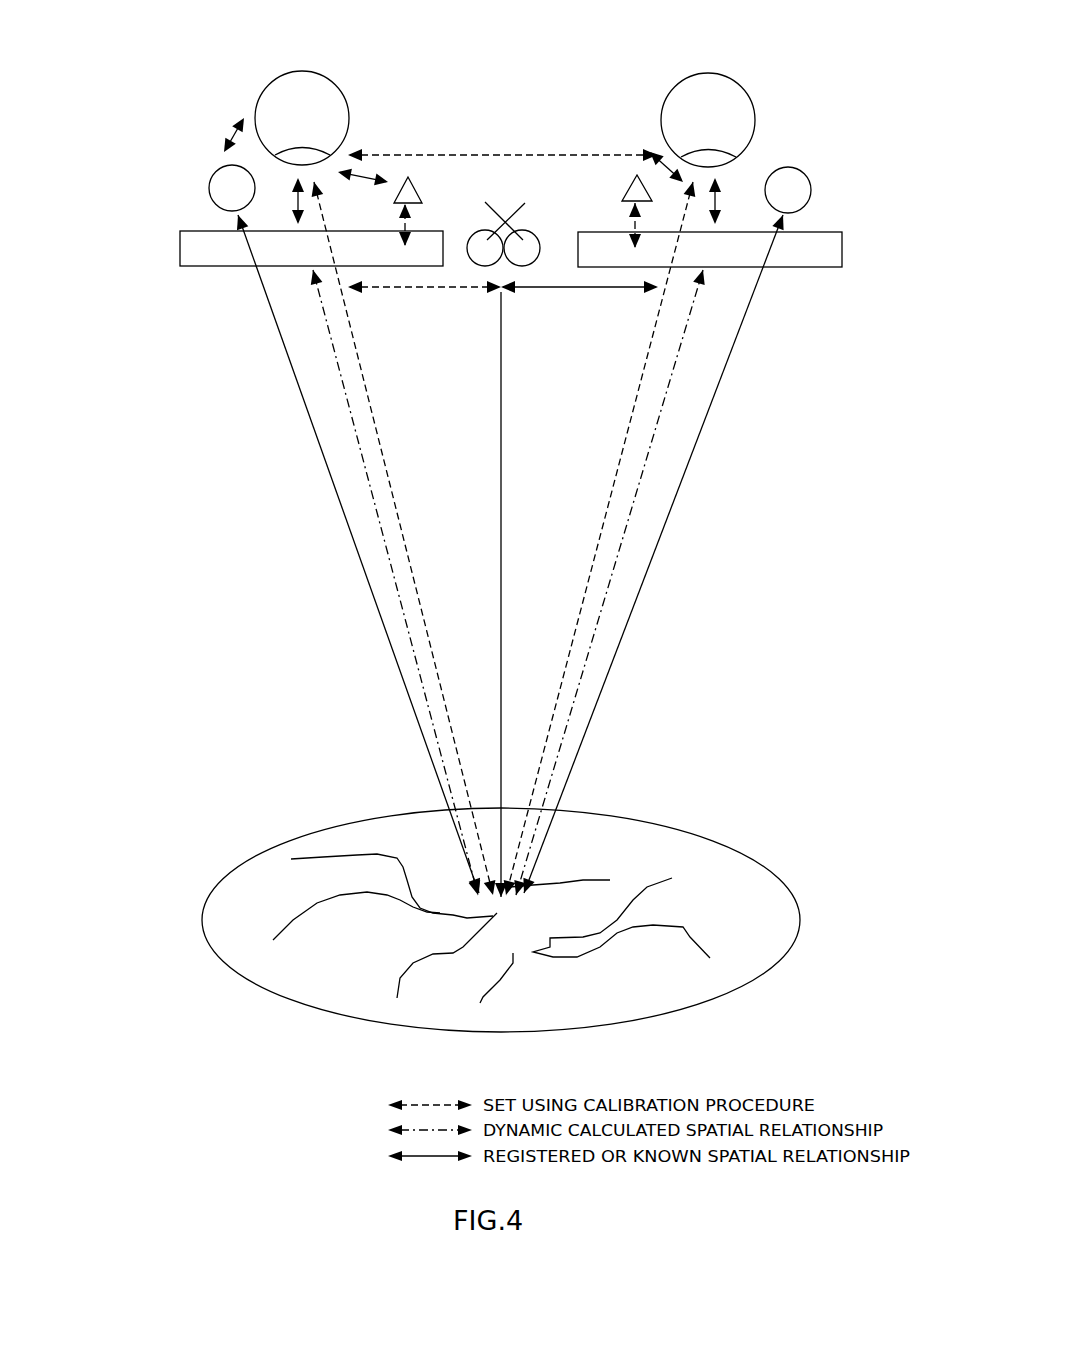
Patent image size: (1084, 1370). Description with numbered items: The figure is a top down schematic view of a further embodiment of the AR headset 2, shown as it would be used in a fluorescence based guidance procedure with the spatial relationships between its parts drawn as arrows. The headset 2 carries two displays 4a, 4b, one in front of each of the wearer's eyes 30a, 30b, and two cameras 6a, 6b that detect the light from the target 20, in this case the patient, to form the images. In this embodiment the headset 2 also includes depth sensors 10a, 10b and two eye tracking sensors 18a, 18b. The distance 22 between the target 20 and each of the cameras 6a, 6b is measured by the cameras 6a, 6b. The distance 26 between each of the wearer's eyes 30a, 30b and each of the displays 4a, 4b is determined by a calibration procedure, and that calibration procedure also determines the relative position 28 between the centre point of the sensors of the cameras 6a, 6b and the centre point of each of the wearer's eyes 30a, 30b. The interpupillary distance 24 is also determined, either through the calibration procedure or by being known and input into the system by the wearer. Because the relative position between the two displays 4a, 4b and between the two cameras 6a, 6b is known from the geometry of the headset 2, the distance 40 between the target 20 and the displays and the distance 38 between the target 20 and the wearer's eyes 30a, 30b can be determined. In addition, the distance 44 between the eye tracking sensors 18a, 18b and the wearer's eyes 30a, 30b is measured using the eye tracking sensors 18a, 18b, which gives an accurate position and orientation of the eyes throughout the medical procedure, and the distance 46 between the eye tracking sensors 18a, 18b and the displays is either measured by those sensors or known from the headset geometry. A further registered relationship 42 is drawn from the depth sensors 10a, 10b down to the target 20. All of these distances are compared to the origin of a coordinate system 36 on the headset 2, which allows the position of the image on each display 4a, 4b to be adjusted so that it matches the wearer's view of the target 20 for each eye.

The AR headset 2 is at (142, 162).
The display 4a is at (200, 268).
The display 4b is at (826, 268).
The camera 6a is at (210, 195).
The camera 6b is at (810, 183).
The depth sensor 10a is at (483, 266).
The depth sensor 10b is at (521, 268).
The eye tracking sensor 18a is at (417, 170).
The eye tracking sensor 18b is at (628, 172).
The target 20 is at (297, 835).
The distance between the target and each camera 22 is at (341, 503).
The interpupillary distance 24 is at (515, 155).
The distance between the wearer's eyes and the displays 26 is at (298, 218).
The relative position between camera sensor centre point and eye centre point 28 is at (238, 128).
The wearer's eye 30a is at (282, 76).
The wearer's eye 30b is at (742, 85).
The origin of a coordinate system 36 is at (504, 218).
The distance between the target and the wearer's eyes 38 is at (391, 495).
The distance between the target and the display 40 is at (350, 410).
The registered relationship between projector and anatomy 42 is at (503, 442).
The distance between the eye tracking sensors and the wearer's eyes 44 is at (362, 178).
The distance between the eye tracking sensors and the display 46 is at (404, 252).